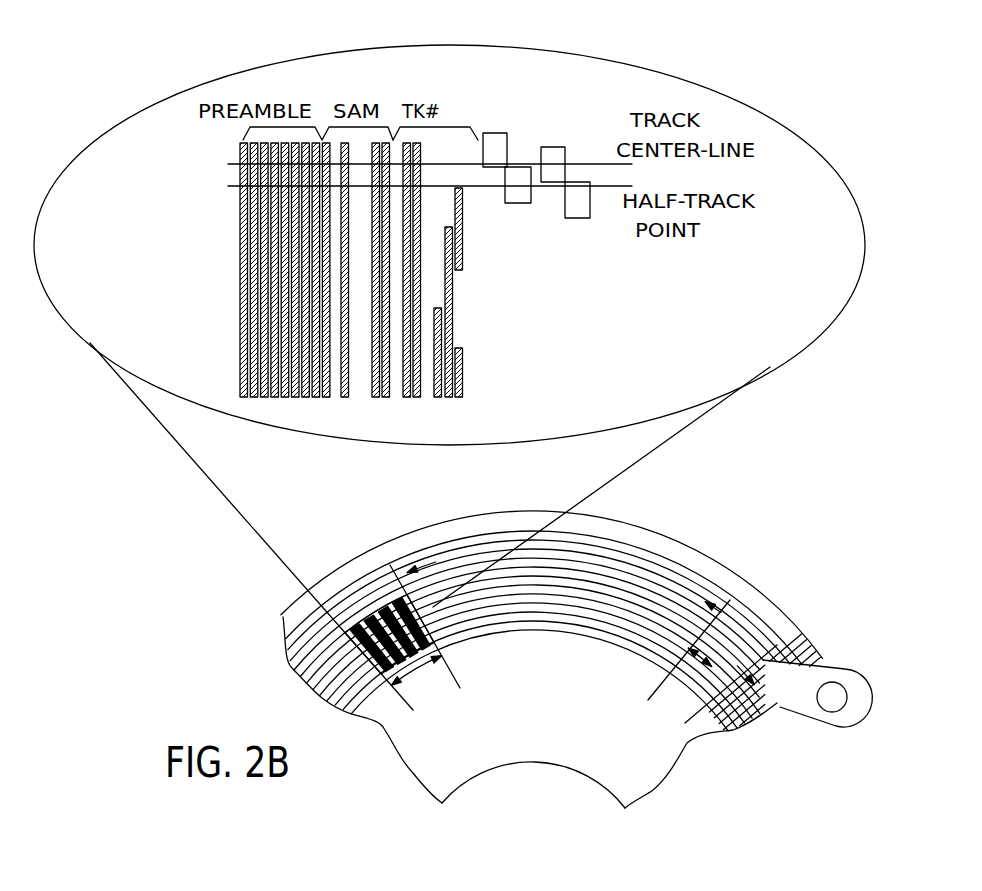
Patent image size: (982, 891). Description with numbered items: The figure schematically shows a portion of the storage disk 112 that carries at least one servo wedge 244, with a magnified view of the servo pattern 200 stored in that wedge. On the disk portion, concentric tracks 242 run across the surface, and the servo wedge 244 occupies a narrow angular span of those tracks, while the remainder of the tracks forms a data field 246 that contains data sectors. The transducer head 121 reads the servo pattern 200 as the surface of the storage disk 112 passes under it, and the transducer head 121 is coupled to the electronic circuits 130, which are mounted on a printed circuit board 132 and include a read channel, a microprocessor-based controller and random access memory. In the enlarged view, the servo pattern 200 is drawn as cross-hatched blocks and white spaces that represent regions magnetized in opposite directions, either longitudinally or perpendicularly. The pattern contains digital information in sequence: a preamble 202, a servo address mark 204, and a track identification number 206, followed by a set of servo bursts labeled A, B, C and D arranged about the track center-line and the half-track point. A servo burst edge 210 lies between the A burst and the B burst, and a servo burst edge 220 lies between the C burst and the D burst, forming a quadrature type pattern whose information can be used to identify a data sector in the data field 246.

The servo pattern 200 is at (683, 80).
The preamble 202 is at (243, 140).
The servo address mark (SAM) 204 is at (392, 127).
The track identification number 206 is at (467, 127).
The servo burst edge 210 is at (508, 167).
The servo burst edge 220 is at (567, 182).
The storage disk 112 is at (313, 636).
The data tracks 242 is at (615, 574).
The servo wedge 244 is at (422, 674).
The data field 246 is at (470, 553).
The transducer head 121 is at (683, 652).
The electronic circuits 130 is at (783, 712).
The printed circuit board 132 is at (838, 682).